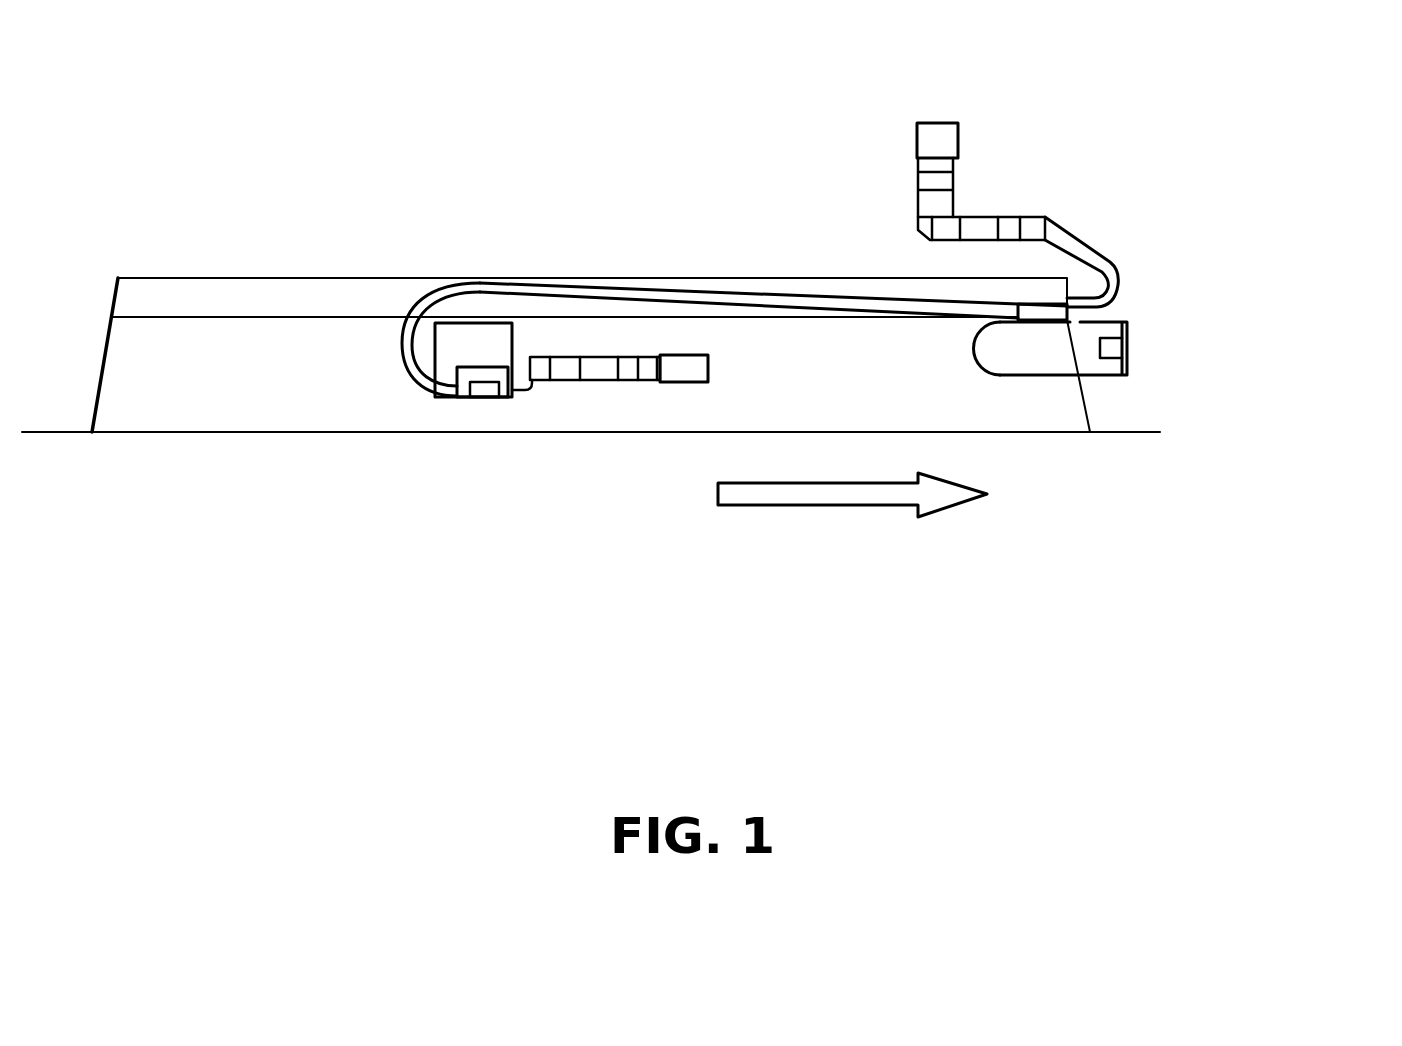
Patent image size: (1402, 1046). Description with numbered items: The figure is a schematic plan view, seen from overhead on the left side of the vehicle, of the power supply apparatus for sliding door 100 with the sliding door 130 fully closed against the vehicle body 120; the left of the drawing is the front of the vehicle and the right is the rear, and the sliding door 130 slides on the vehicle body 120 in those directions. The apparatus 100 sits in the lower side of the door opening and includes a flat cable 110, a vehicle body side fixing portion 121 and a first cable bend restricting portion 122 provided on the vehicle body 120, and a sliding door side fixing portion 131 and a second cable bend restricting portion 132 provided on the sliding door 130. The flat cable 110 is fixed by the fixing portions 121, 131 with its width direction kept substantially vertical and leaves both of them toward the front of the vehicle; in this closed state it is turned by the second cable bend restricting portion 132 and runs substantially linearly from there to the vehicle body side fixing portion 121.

The power supply apparatus for sliding door 100 is at (548, 215).
The flat cable 110 is at (705, 297).
The vehicle body 120 is at (360, 277).
The vehicle body side fixing portion 121 is at (1047, 303).
The first cable bend restricting portion 122 is at (1038, 363).
The sliding door 130 is at (315, 432).
The sliding door side fixing portion 131 is at (483, 401).
The second cable bend restricting portion 132 is at (470, 343).